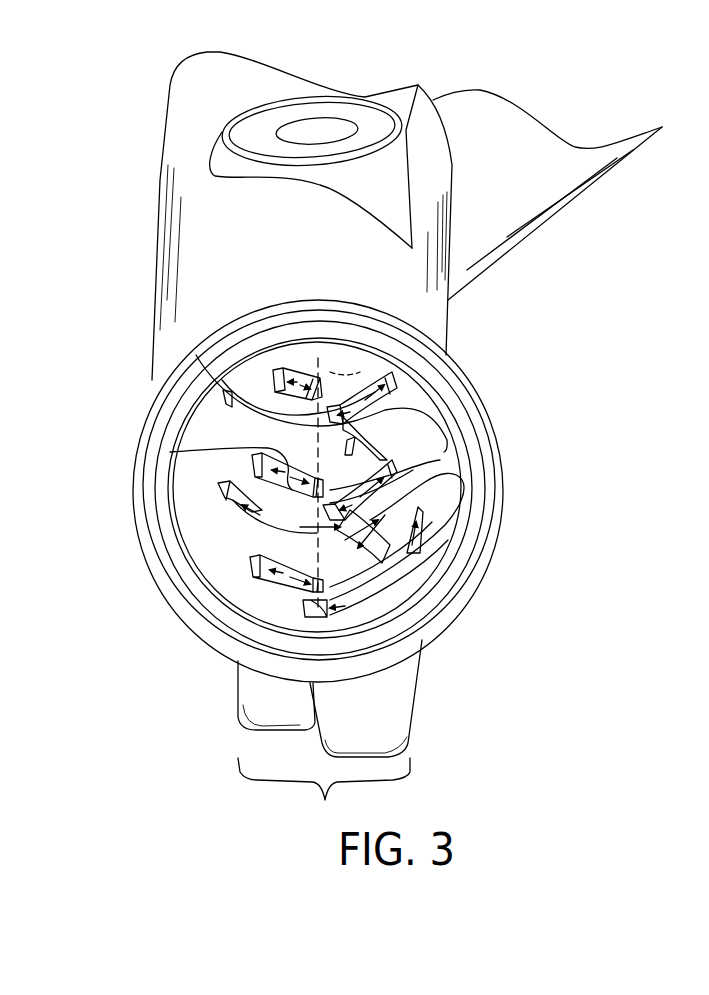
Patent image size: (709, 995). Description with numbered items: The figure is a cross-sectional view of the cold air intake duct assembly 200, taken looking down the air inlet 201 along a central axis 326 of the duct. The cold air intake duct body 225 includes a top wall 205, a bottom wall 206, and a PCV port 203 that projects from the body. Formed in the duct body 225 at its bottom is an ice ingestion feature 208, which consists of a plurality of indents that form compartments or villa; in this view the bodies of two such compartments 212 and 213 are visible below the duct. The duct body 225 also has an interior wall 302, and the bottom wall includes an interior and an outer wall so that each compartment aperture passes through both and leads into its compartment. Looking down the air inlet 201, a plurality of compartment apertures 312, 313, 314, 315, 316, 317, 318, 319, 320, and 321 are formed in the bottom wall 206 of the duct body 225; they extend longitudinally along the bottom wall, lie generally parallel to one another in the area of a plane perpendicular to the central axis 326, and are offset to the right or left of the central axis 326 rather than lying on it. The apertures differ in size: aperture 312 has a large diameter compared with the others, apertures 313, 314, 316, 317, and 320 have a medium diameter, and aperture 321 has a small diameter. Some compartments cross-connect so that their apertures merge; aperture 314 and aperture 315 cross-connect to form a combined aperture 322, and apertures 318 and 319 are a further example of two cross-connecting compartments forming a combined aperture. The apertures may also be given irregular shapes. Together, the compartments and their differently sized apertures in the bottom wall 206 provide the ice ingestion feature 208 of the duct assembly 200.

The cold air intake duct assembly 200 is at (108, 154).
The air inlet 201 is at (473, 470).
The PCV port 203 is at (268, 118).
The top wall 205 is at (190, 218).
The bottom wall 206 is at (550, 233).
The ice ingestion feature 208 is at (324, 794).
The compartment 212 is at (398, 719).
The compartment 213 is at (247, 697).
The cold air intake duct body 225 is at (548, 183).
The interior wall 302 is at (440, 425).
The compartment aperture 312 is at (387, 580).
The compartment aperture 313 is at (290, 600).
The compartment aperture 314 is at (400, 485).
The compartment aperture 315 is at (255, 478).
The compartment aperture 316 is at (395, 462).
The compartment aperture 317 is at (262, 470).
The compartment aperture 318 is at (442, 437).
The compartment aperture 319 is at (257, 418).
The compartment aperture 320 is at (363, 392).
The compartment aperture 321 is at (302, 372).
The combined aperture 322 is at (302, 550).
The central axis 326 is at (347, 360).